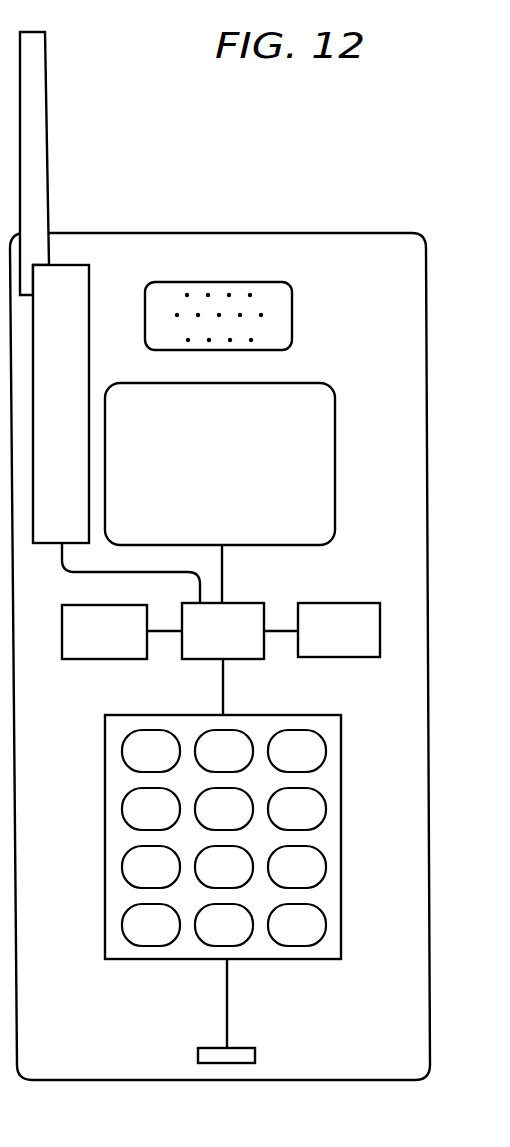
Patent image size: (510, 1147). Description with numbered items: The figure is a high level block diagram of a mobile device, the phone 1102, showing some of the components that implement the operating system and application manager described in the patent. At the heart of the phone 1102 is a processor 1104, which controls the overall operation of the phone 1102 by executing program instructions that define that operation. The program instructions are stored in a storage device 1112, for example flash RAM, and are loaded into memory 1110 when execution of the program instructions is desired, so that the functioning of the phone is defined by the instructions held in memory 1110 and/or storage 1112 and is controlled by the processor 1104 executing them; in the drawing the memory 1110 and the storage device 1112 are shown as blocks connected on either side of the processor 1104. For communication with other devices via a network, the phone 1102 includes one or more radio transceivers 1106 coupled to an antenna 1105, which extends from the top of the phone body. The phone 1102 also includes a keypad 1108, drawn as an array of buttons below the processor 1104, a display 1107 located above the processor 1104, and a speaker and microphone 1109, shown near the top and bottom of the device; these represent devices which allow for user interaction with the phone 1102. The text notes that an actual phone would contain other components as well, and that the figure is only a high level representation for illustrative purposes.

The phone 1102 is at (352, 186).
The processor 1104 is at (243, 644).
The antenna 1105 is at (45, 166).
The radio transceiver 1106 is at (81, 418).
The display 1107 is at (240, 477).
The keypad 1108 is at (341, 746).
The speaker and microphone 1109 is at (292, 316).
The memory 1110 is at (124, 644).
The storage device 1112 is at (359, 644).